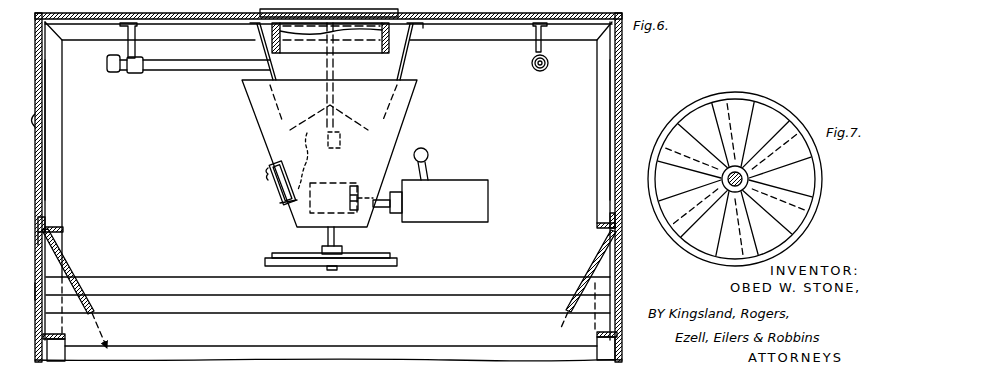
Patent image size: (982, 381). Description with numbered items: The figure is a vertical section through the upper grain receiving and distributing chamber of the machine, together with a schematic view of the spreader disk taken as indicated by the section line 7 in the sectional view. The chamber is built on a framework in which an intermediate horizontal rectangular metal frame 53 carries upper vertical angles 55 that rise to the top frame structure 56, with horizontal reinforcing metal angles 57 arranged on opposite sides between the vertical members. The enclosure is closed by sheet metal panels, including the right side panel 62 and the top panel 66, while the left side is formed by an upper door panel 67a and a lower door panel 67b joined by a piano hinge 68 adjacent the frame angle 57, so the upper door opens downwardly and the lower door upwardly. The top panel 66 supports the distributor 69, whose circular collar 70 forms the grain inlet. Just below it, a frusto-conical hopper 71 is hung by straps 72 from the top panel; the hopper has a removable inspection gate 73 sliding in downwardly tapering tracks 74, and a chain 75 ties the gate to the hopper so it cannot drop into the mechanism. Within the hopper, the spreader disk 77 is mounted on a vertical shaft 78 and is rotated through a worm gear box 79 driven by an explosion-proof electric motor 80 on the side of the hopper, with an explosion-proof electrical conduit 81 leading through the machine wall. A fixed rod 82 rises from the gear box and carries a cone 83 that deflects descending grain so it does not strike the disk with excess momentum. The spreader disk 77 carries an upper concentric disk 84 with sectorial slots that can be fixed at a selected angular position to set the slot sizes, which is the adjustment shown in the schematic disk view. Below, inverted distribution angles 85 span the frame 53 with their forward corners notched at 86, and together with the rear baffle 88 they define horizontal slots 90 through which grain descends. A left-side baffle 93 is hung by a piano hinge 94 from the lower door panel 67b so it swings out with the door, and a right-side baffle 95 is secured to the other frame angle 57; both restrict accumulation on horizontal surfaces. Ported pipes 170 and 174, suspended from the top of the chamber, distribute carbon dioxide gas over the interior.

In FIG. 6, the intermediate horizontal rectangular metal frame 53 is at (43, 347).
In FIG. 6, the upper vertical angles 55 is at (50, 165).
In FIG. 6, the top frame structure 56 is at (45, 23).
In FIG. 6, the horizontal reinforcing metal angles 57 is at (48, 220).
In FIG. 6, the right side panel 62 is at (623, 78).
In FIG. 6, the top panel 66 is at (77, 15).
In FIG. 6, the upper door panel 67a is at (45, 127).
In FIG. 6, the lower door panel 67b is at (37, 283).
In FIG. 6, the piano hinge 68 is at (38, 240).
In FIG. 6, the distributor 69 is at (255, 145).
In FIG. 6, the circular collar 70 is at (373, 51).
In FIG. 6, the frusto-conical hopper 71 is at (252, 120).
In FIG. 6, the straps 72 is at (327, 62).
In FIG. 6, the removable inspection gate 73 is at (266, 172).
In FIG. 6, the downwardly tapering tracks 74 is at (287, 202).
In FIG. 6, the chain 75 is at (322, 166).
In FIG. 6, the spreader disk 77 is at (398, 267).
In FIG. 7, the spreader disk 77 is at (819, 205).
In FIG. 6, the vertical shaft 78 is at (316, 253).
In FIG. 7, the vertical shaft 78 is at (749, 178).
In FIG. 6, the gear box 79 is at (347, 183).
In FIG. 6, the explosion-proof electric motor 80 is at (467, 182).
In FIG. 6, the explosion-proof electrical conduit 81 is at (430, 160).
In FIG. 6, the fixed rod 82 is at (343, 142).
In FIG. 6, the cone 83 is at (357, 120).
In FIG. 6, the upper concentric disk 84 is at (355, 262).
In FIG. 7, the upper concentric disk 84 is at (793, 222).
In FIG. 6, the distribution angles 85 is at (192, 313).
In FIG. 6, the notch 86 is at (65, 340).
In FIG. 6, the rear baffle 88 is at (452, 300).
In FIG. 6, the horizontal slots 90 is at (160, 355).
In FIG. 6, the left-side baffle 93 is at (62, 258).
In FIG. 6, the piano hinge 94 is at (52, 235).
In FIG. 6, the right-side baffle 95 is at (595, 262).
In FIG. 6, the pipe 170 is at (167, 67).
In FIG. 6, the pipe 174 is at (540, 72).
In FIG. 6, the section line 7- 7 is at (410, 237).